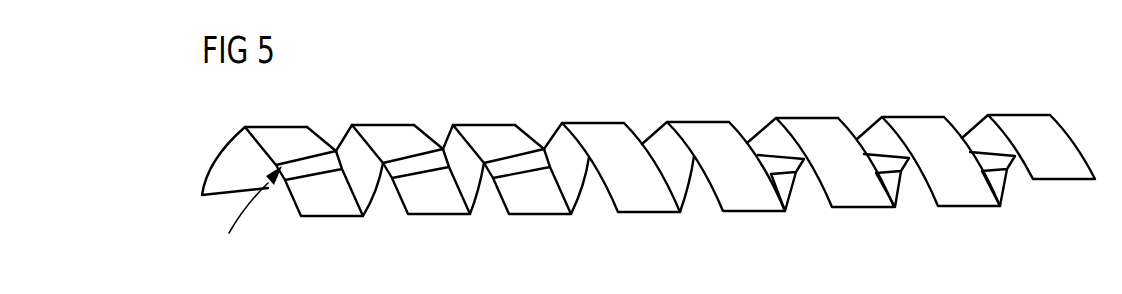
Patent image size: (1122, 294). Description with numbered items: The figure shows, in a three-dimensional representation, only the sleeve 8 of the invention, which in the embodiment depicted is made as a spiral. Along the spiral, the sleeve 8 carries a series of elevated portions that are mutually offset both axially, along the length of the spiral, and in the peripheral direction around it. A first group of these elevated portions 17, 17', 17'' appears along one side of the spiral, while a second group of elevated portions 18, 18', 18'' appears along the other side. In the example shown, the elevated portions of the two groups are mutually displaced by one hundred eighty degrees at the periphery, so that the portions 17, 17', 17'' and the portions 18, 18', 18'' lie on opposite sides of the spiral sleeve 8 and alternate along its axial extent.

The sleeve 8 is at (707, 130).
The elevated portion 17 is at (304, 152).
The elevated portion 17' is at (411, 149).
The elevated portion 17'' is at (512, 149).
The elevated portion 18 is at (778, 148).
The elevated portion 18' is at (883, 145).
The elevated portion 18'' is at (988, 145).